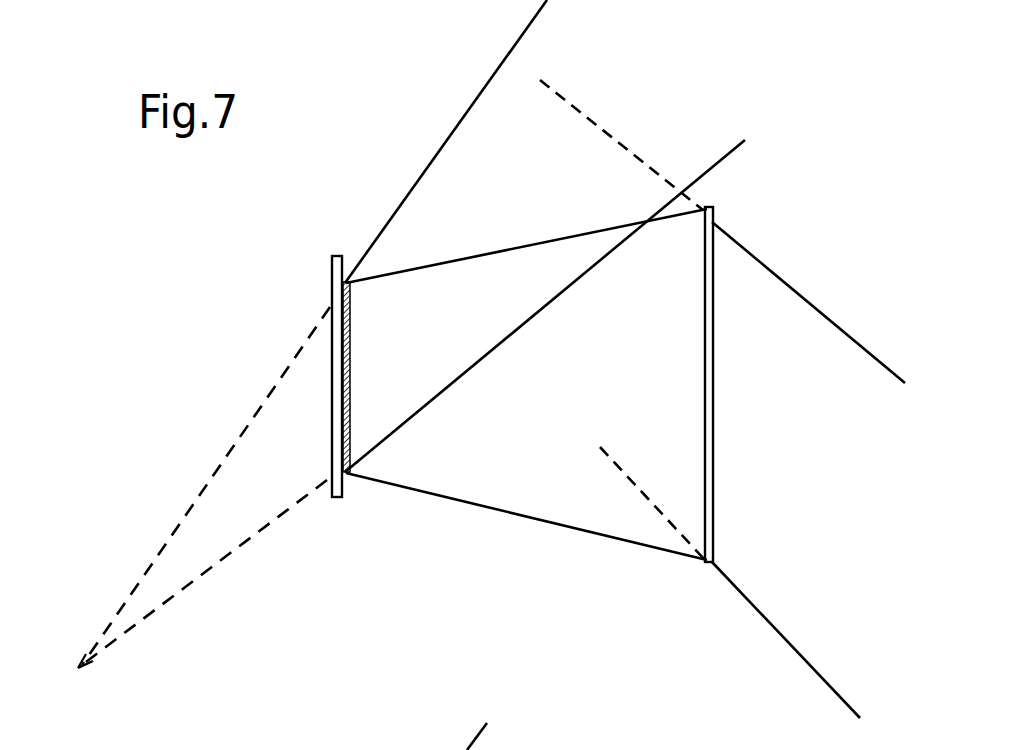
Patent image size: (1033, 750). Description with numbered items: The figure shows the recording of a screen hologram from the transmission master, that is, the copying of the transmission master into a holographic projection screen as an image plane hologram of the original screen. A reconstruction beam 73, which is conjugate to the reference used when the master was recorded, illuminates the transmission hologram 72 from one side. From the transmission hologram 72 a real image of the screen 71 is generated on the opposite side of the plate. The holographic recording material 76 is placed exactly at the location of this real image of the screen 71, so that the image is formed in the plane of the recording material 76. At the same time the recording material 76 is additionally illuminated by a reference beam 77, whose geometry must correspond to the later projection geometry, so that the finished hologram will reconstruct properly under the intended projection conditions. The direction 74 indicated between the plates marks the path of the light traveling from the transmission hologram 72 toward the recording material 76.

The screen 71 is at (350, 400).
The transmission hologram 72 is at (705, 558).
The reconstruction beam 73 is at (885, 536).
The light propagation direction 74 is at (522, 377).
The holographic recording material 76 is at (331, 497).
The reference beam 77 is at (643, 67).